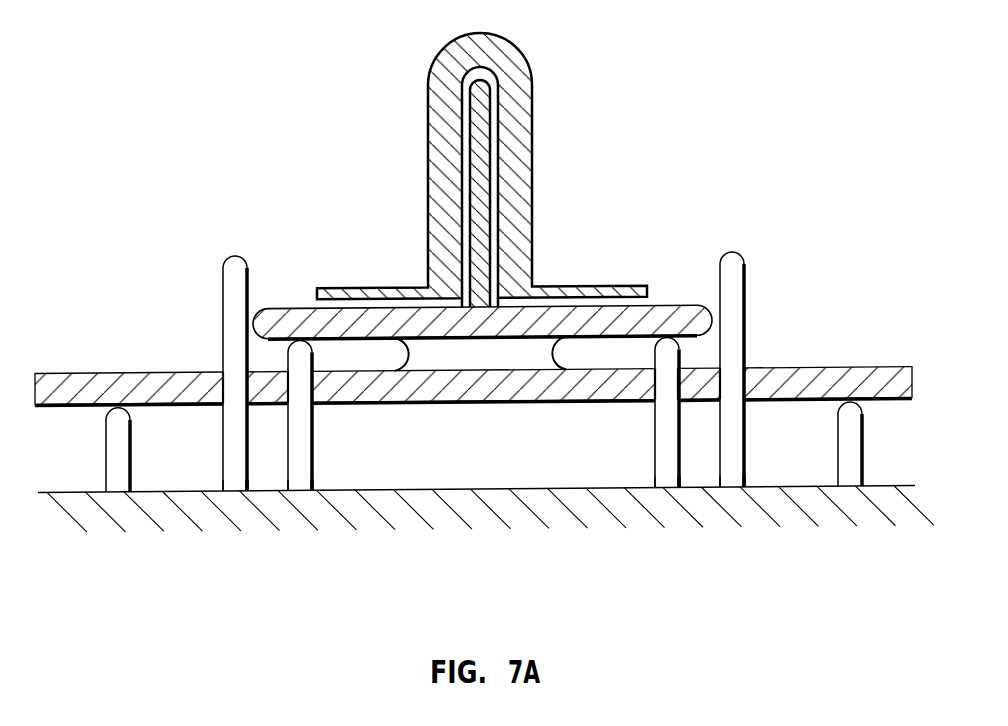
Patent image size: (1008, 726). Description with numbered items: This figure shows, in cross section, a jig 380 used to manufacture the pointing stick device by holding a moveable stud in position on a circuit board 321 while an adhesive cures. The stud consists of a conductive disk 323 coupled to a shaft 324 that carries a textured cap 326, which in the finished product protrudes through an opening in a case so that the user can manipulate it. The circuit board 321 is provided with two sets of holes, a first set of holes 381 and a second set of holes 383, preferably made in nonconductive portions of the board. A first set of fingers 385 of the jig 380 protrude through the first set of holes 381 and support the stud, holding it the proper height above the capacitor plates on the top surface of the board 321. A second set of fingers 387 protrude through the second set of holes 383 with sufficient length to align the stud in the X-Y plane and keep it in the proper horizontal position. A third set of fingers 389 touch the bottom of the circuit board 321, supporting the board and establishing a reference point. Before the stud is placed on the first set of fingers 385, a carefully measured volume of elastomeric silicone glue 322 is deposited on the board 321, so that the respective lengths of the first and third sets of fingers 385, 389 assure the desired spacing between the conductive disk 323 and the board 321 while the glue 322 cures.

The circuit board 321 is at (885, 371).
The silicone glue 322 is at (553, 350).
The conductive disk 323 is at (668, 304).
The shaft 324 is at (495, 260).
The textured cap 326 is at (535, 129).
The jig 380 is at (898, 540).
The first set of holes 381 is at (313, 405).
The second set of holes 383 is at (222, 406).
The first set of fingers 385 is at (312, 478).
The second set of fingers 387 is at (223, 478).
The third set of fingers 389 is at (105, 464).